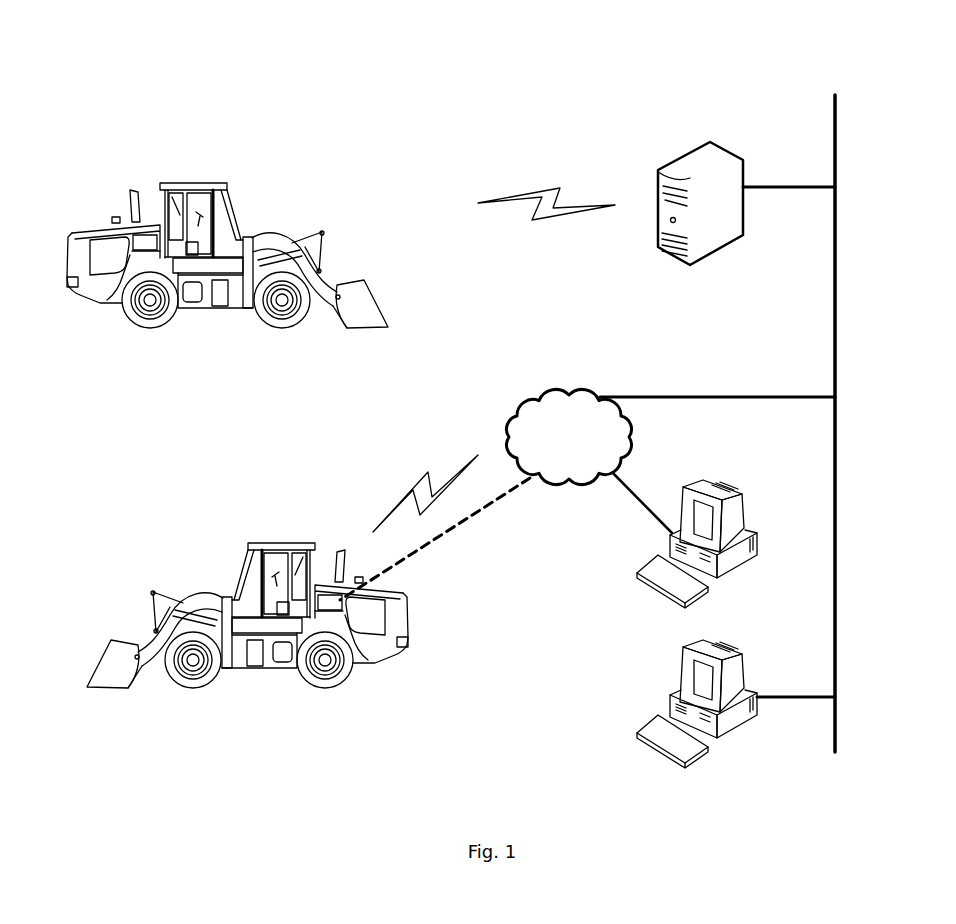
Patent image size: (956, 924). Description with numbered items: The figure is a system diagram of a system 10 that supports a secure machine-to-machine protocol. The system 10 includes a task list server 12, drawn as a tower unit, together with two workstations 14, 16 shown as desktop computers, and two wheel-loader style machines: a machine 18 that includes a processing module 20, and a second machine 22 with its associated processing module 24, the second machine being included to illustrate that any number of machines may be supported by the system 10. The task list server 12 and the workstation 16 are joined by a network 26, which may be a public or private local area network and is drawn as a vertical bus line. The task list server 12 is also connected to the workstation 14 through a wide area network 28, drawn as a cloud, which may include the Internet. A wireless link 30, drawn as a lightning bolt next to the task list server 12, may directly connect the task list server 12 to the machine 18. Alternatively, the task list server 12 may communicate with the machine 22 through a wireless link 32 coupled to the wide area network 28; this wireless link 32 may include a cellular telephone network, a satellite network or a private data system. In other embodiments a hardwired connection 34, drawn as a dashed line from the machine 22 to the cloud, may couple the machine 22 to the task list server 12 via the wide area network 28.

The system 10 is at (468, 37).
The task list server 12 is at (737, 155).
The workstation 14 is at (743, 500).
The workstation 16 is at (737, 658).
The machine 18 is at (224, 239).
The processing module 20 is at (118, 300).
The second machine 22 is at (262, 597).
The processing module 24 is at (373, 642).
The network 26 is at (832, 343).
The wide area network 28 is at (572, 383).
The wireless link 30 is at (535, 192).
The wireless link 32 is at (413, 488).
The hardwired connection 34 is at (500, 500).